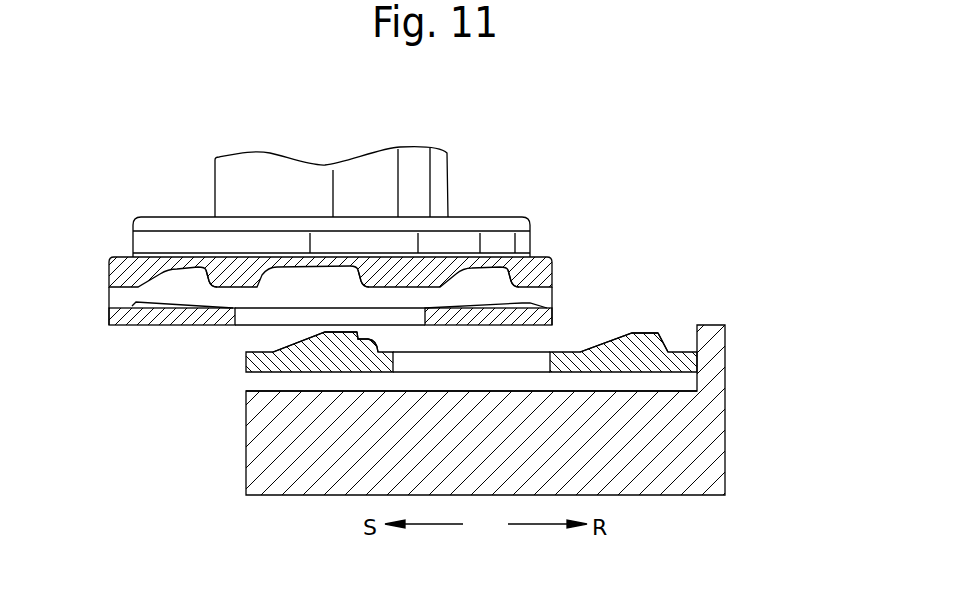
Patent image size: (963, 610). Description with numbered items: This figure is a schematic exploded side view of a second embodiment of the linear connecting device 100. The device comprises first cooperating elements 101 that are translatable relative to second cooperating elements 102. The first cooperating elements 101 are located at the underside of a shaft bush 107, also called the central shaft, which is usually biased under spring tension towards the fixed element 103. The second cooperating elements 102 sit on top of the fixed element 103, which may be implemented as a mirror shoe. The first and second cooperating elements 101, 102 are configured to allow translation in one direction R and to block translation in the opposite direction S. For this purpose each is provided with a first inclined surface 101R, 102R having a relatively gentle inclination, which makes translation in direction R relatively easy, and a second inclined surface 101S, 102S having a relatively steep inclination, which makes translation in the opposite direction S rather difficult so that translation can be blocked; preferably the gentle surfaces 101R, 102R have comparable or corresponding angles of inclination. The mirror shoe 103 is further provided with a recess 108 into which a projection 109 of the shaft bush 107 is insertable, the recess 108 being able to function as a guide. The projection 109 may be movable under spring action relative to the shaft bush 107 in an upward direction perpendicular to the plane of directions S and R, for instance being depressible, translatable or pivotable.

The linear connecting device 100 is at (648, 287).
The first cooperating elements 101 is at (128, 274).
The first inclined surface 101R is at (178, 276).
The second inclined surface 101S is at (213, 283).
The second cooperating elements 102 is at (260, 378).
The first inclined surface 102R is at (297, 341).
The second inclined surface 102S is at (378, 353).
The fixed element 103 is at (667, 452).
The shaft bush 107 is at (418, 178).
The recess 108 is at (260, 390).
The projection 109 is at (550, 317).